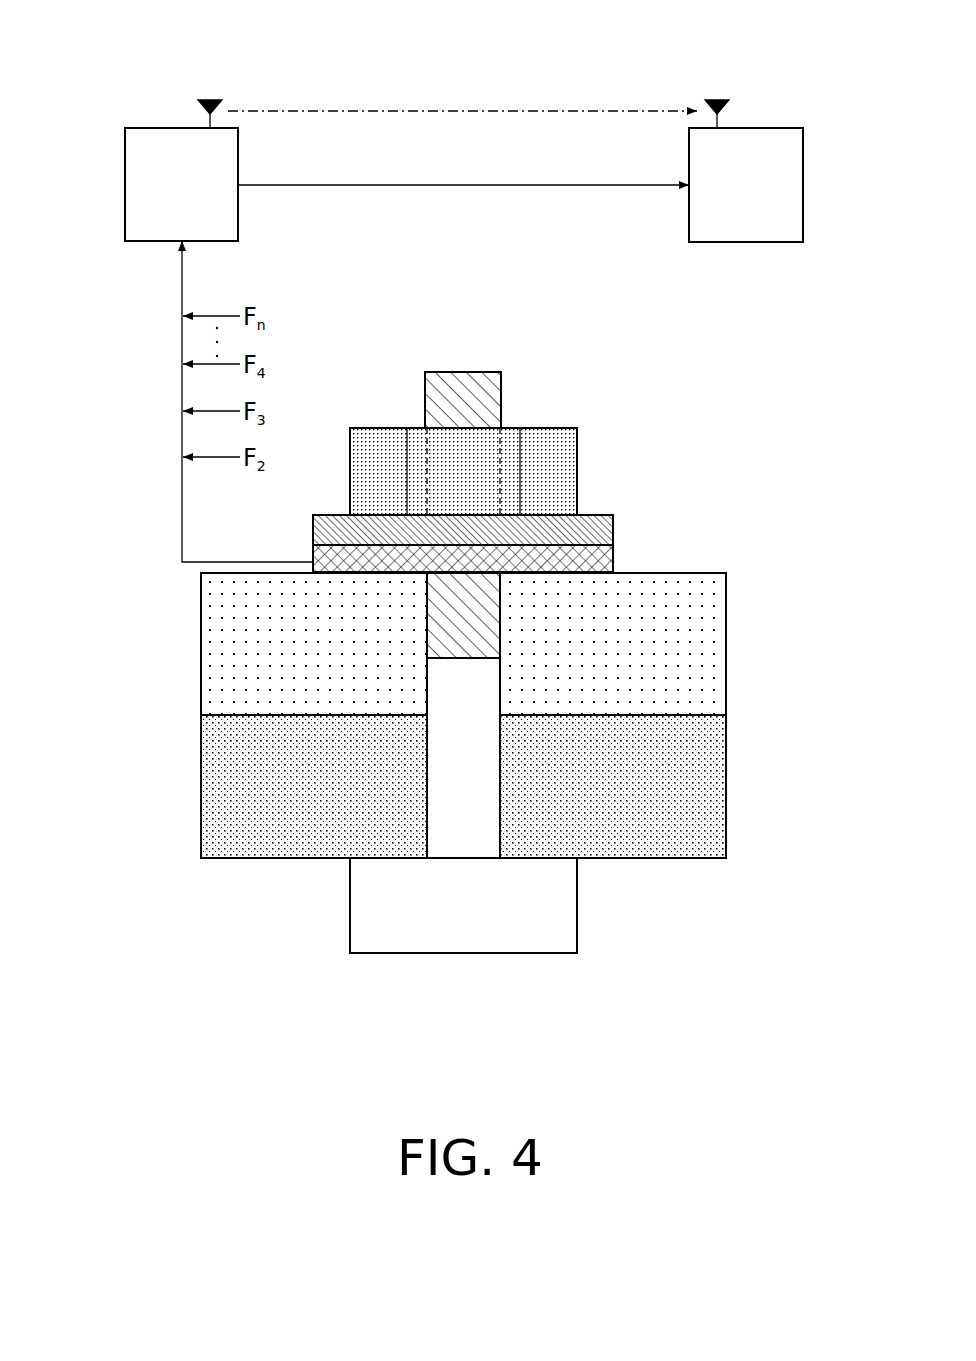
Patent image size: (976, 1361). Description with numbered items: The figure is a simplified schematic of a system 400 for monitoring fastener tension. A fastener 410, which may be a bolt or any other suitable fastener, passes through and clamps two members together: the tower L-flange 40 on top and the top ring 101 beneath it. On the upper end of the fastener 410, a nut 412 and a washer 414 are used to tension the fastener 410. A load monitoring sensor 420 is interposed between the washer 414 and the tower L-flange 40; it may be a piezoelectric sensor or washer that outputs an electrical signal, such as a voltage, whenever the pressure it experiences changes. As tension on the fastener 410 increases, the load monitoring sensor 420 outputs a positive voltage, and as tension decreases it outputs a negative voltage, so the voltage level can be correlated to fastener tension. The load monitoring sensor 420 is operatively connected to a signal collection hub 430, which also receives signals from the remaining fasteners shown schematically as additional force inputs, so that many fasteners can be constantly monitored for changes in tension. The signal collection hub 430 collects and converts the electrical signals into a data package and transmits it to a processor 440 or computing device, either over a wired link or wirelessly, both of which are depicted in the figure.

The system for monitoring fastener tension 400 is at (172, 82).
The signal collection hub 430 is at (181, 184).
The processor 440 is at (746, 185).
The fastener 410 is at (481, 380).
The nut 412 is at (572, 432).
The washer 414 is at (612, 518).
The load monitoring sensor 420 is at (613, 556).
The tower L-flange 40 is at (709, 650).
The top ring 101 is at (715, 788).